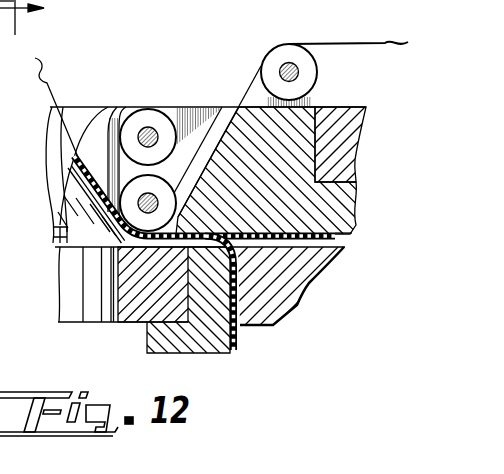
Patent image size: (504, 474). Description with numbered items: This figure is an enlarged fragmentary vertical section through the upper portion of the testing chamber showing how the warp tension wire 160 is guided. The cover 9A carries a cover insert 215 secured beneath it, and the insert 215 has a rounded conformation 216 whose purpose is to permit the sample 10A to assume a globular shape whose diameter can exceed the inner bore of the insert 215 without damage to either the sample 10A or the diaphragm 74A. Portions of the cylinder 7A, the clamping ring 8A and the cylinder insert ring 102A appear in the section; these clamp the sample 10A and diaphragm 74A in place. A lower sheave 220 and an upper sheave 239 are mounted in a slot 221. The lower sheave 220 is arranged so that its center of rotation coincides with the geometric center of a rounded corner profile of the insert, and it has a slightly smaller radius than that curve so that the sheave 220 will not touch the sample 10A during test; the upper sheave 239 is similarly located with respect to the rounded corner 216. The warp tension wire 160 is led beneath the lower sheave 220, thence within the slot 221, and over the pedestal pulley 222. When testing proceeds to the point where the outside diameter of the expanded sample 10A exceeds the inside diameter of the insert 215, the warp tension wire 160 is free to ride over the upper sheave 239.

The warp tension wire 160 is at (47, 83).
The rounded conformation 216 is at (121, 107).
The upper sheave 239 is at (146, 118).
The lower sheave 220 is at (196, 108).
The slot 221 is at (231, 100).
The pedestal pulley 222 is at (308, 80).
The cover 9A is at (345, 128).
The cover insert 215 is at (335, 200).
The sample 10A is at (332, 239).
The clamping ring 8A is at (302, 283).
The diaphragm 74A is at (240, 340).
The cylinder 7A is at (213, 352).
The cylinder insert ring 102A is at (78, 308).